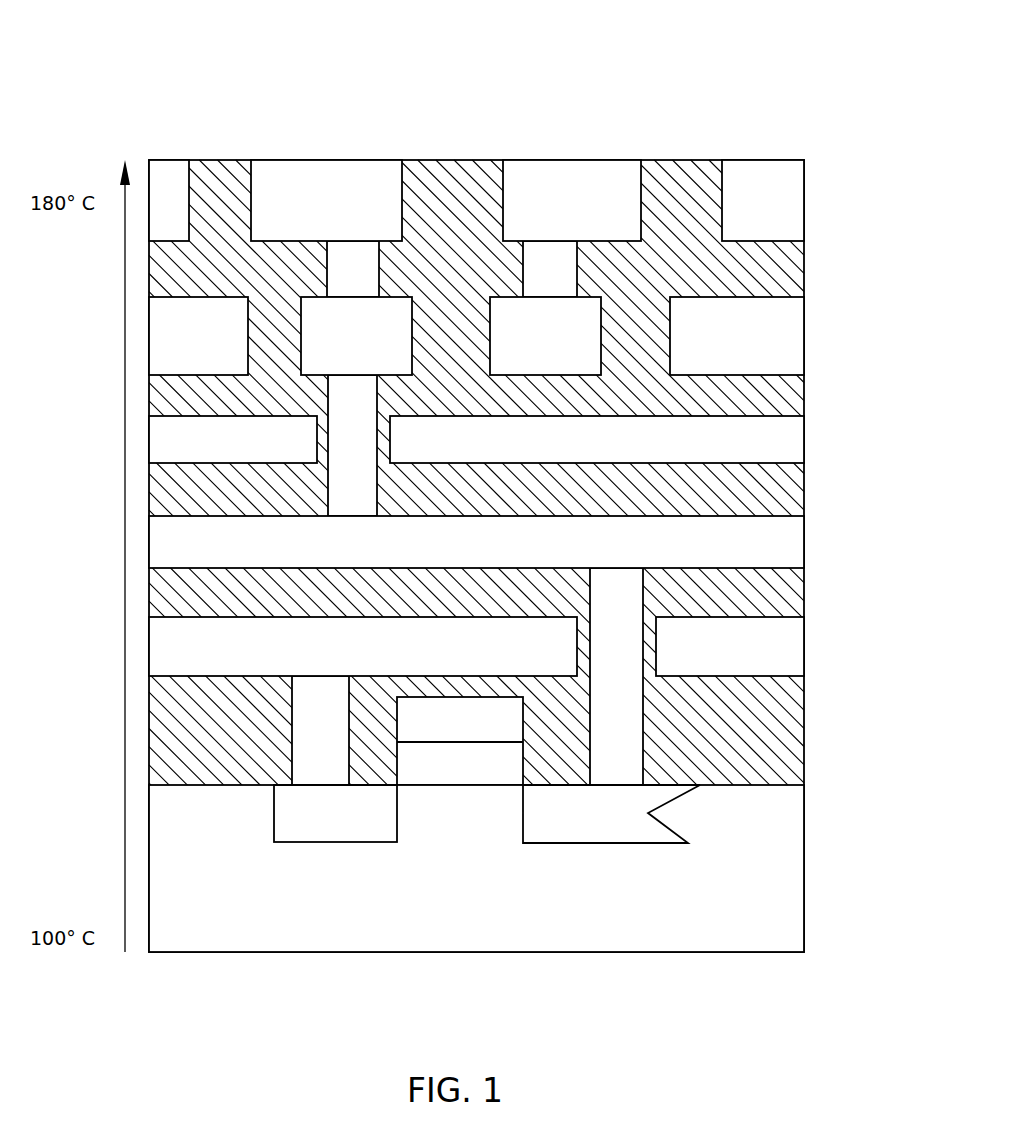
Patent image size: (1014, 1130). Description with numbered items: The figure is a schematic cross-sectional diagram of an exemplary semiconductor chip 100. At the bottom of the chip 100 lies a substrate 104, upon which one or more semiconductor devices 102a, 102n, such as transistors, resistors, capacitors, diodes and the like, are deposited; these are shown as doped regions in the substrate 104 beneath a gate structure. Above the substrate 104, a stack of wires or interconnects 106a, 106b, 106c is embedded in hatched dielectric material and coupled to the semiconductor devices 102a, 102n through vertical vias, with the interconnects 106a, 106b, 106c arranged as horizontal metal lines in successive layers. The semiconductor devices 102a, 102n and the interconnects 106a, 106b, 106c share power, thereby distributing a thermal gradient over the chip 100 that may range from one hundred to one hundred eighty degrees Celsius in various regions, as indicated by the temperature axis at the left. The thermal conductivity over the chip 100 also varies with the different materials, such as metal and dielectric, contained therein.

The semiconductor chip 100 is at (206, 86).
The semiconductor device 102a is at (274, 825).
The semiconductor device 102n is at (523, 826).
The substrate 104 is at (388, 932).
The interconnect 106a is at (757, 215).
The interconnect 106b is at (757, 343).
The interconnect 106c is at (757, 660).